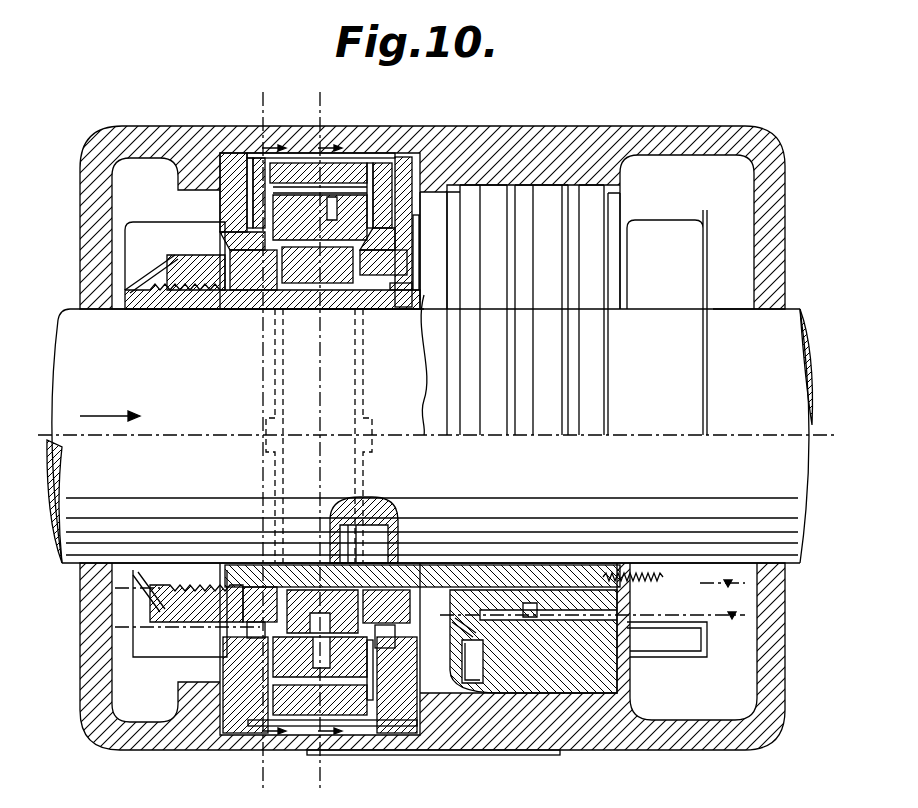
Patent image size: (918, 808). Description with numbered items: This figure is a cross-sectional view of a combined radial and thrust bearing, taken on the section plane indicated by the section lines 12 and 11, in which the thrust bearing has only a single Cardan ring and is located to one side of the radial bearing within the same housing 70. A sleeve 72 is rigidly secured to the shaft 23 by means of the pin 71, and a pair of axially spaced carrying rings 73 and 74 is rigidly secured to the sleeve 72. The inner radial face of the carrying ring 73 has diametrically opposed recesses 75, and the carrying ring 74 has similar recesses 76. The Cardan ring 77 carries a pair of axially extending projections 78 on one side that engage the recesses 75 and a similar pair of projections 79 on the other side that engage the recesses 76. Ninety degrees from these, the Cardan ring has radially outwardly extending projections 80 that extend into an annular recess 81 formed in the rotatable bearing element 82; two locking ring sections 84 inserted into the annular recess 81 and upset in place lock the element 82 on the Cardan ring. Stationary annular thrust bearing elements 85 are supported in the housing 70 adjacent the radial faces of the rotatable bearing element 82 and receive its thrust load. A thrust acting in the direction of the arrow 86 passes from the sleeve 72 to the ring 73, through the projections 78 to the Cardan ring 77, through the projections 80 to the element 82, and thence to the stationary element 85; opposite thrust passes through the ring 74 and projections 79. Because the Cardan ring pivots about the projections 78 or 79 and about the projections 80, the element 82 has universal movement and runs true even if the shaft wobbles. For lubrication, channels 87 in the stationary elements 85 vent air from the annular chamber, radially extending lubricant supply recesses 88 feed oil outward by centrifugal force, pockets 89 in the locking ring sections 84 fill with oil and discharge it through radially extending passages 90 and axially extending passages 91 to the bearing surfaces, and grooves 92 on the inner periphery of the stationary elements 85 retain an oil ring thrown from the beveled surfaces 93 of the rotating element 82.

The housing 70 is at (623, 750).
The shaft 23 is at (72, 316).
The arrow 86 is at (114, 414).
The section line 12 is at (270, 439).
The section line 11 is at (325, 439).
The stationary annular thrust bearing element 85 is at (233, 153).
The lubricant supply recess 88 is at (262, 172).
The channel 87 is at (250, 200).
The radially extending passage 90 is at (330, 170).
The radially outwardly extending projection 80 is at (312, 275).
The Cardan ring 77 is at (352, 283).
The rotatable bearing element 82 is at (420, 226).
The annular recess 81 is at (226, 232).
The sleeve 72 is at (232, 303).
The recess 75 is at (272, 418).
The axially extending projection 78 is at (283, 421).
The axially extending projection 79 is at (356, 421).
The recess 76 is at (372, 420).
The pin 71 is at (399, 526).
The locking ring section 84 is at (318, 578).
The carrying ring 73 is at (245, 620).
The carrying ring 74 is at (400, 612).
The pocket 89 is at (318, 633).
The groove 92 is at (250, 640).
The beveled surface 93 is at (373, 660).
The axially extending passage 91 is at (352, 690).